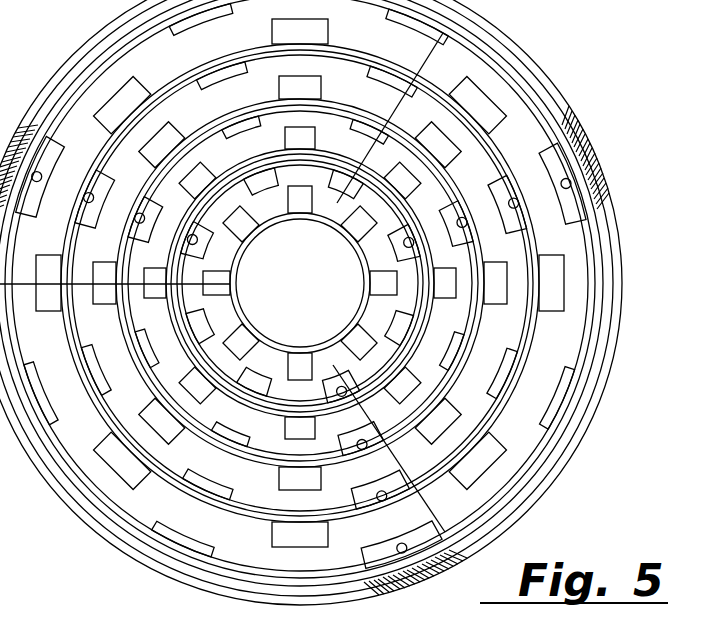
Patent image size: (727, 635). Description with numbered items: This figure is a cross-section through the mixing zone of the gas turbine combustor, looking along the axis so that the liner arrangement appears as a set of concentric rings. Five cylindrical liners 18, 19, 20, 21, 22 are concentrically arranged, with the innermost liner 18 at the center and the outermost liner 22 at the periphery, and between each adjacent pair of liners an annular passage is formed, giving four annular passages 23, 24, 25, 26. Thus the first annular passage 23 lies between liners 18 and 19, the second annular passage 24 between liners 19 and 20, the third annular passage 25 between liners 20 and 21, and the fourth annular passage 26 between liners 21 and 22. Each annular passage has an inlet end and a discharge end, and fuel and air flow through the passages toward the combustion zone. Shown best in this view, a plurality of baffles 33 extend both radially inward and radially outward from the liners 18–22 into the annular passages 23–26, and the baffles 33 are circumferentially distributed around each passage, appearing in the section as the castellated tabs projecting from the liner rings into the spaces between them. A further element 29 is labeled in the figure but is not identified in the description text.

The cylindrical liner 18 is at (360, 257).
The cylindrical liner 19 is at (283, 150).
The cylindrical liner 20 is at (470, 372).
The cylindrical liner 21 is at (543, 296).
The cylindrical liner 22 is at (590, 262).
The annular passage 23 is at (271, 372).
The annular passage 24 is at (230, 325).
The annular passage 25 is at (118, 405).
The annular passage 26 is at (135, 502).
The seal 29 is at (603, 170).
The baffle 33 is at (545, 128).